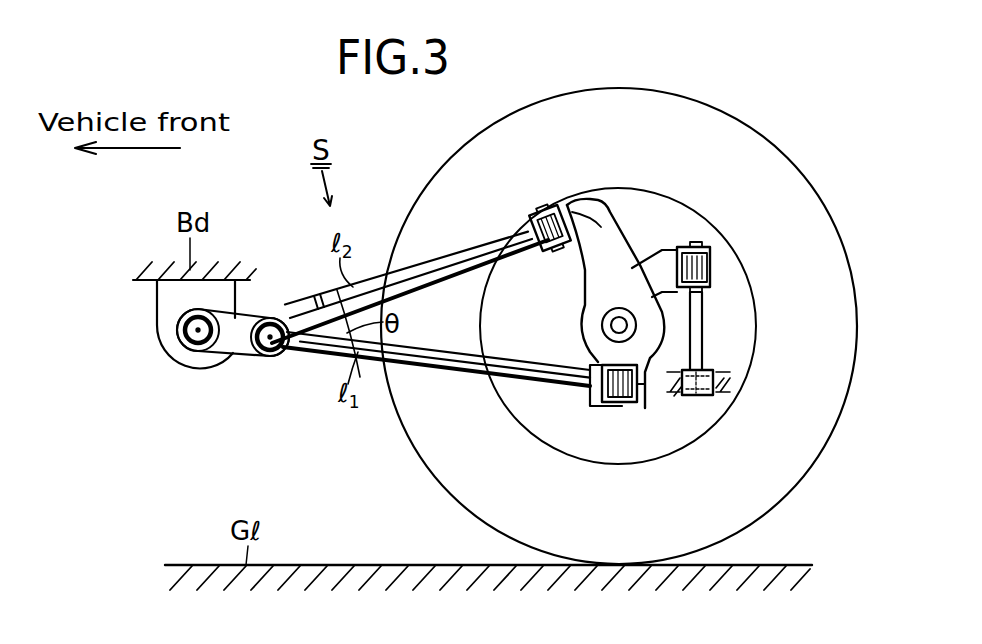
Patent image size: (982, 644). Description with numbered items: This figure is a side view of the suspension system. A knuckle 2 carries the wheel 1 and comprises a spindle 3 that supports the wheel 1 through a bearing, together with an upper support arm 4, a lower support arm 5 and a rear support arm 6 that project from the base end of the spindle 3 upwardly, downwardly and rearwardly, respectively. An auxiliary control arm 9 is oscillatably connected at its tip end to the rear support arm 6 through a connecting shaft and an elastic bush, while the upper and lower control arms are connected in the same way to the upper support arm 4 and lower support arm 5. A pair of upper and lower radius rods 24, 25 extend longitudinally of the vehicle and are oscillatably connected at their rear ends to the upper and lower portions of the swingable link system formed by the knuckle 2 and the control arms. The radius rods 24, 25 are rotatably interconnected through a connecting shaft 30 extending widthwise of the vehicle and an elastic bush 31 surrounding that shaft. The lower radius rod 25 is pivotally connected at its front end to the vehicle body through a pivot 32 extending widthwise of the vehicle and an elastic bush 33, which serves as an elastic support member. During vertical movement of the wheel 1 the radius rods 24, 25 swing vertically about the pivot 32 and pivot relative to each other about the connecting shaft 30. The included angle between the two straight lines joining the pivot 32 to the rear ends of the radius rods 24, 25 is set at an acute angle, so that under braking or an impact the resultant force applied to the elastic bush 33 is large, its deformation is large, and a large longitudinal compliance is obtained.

The wheel 1 is at (785, 152).
The knuckle 2 is at (582, 328).
The spindle 3 is at (618, 308).
The upper support arm 4 is at (614, 236).
The lower support arm 5 is at (643, 407).
The rear support arm 6 is at (662, 258).
The auxiliary control arm 9 is at (700, 325).
The upper radius rod 24 is at (440, 270).
The lower radius rod 25 is at (452, 367).
The connecting shaft 30 is at (275, 357).
The elastic bush 31 is at (260, 357).
The pivot 32 is at (197, 353).
The elastic bush 33 is at (178, 329).